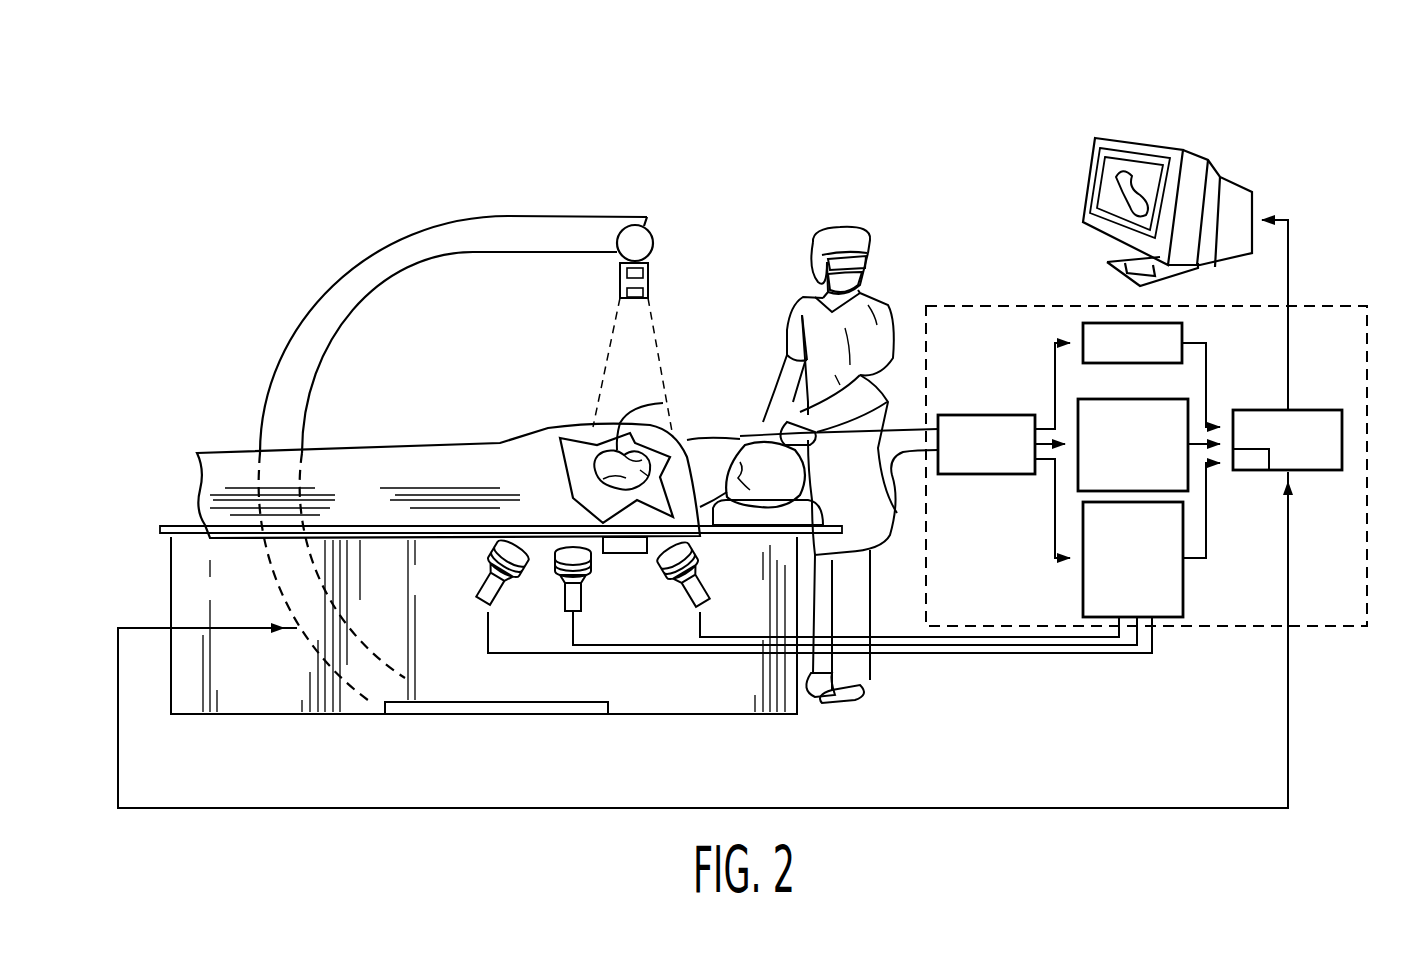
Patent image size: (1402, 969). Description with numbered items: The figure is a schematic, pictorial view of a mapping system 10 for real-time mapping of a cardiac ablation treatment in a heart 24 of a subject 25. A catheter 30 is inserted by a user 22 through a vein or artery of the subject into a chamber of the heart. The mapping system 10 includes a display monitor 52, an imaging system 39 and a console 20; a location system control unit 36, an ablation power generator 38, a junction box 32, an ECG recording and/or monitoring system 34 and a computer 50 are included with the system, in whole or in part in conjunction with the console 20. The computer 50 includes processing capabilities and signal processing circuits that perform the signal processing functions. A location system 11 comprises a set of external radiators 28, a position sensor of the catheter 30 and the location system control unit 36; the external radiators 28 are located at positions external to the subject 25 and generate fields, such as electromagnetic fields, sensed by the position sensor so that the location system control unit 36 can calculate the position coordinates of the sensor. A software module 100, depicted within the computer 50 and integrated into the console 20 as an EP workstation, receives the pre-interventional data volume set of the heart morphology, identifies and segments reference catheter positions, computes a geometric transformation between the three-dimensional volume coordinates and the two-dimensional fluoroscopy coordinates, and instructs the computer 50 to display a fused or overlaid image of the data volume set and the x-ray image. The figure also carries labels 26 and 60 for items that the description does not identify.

The mapping system 10 is at (966, 137).
The location system 11 is at (903, 679).
The console 20 is at (957, 306).
The user 22 is at (803, 298).
The heart 24 is at (622, 415).
The subject 25 is at (380, 440).
The location pad 26 is at (607, 553).
The external radiators 28 is at (487, 600).
The catheter 30 is at (585, 440).
The junction box 32 is at (985, 415).
The electrocardiogram (ECG) recording and/or monitoring system 34 is at (1182, 334).
The location system control unit 36 is at (1083, 590).
The ablation power generator 38 is at (1138, 399).
The imaging system 39 is at (653, 237).
The computer 50 is at (1318, 471).
The display monitor 52 is at (1085, 172).
The heart image 60 is at (1123, 176).
The software module 100 is at (1250, 471).